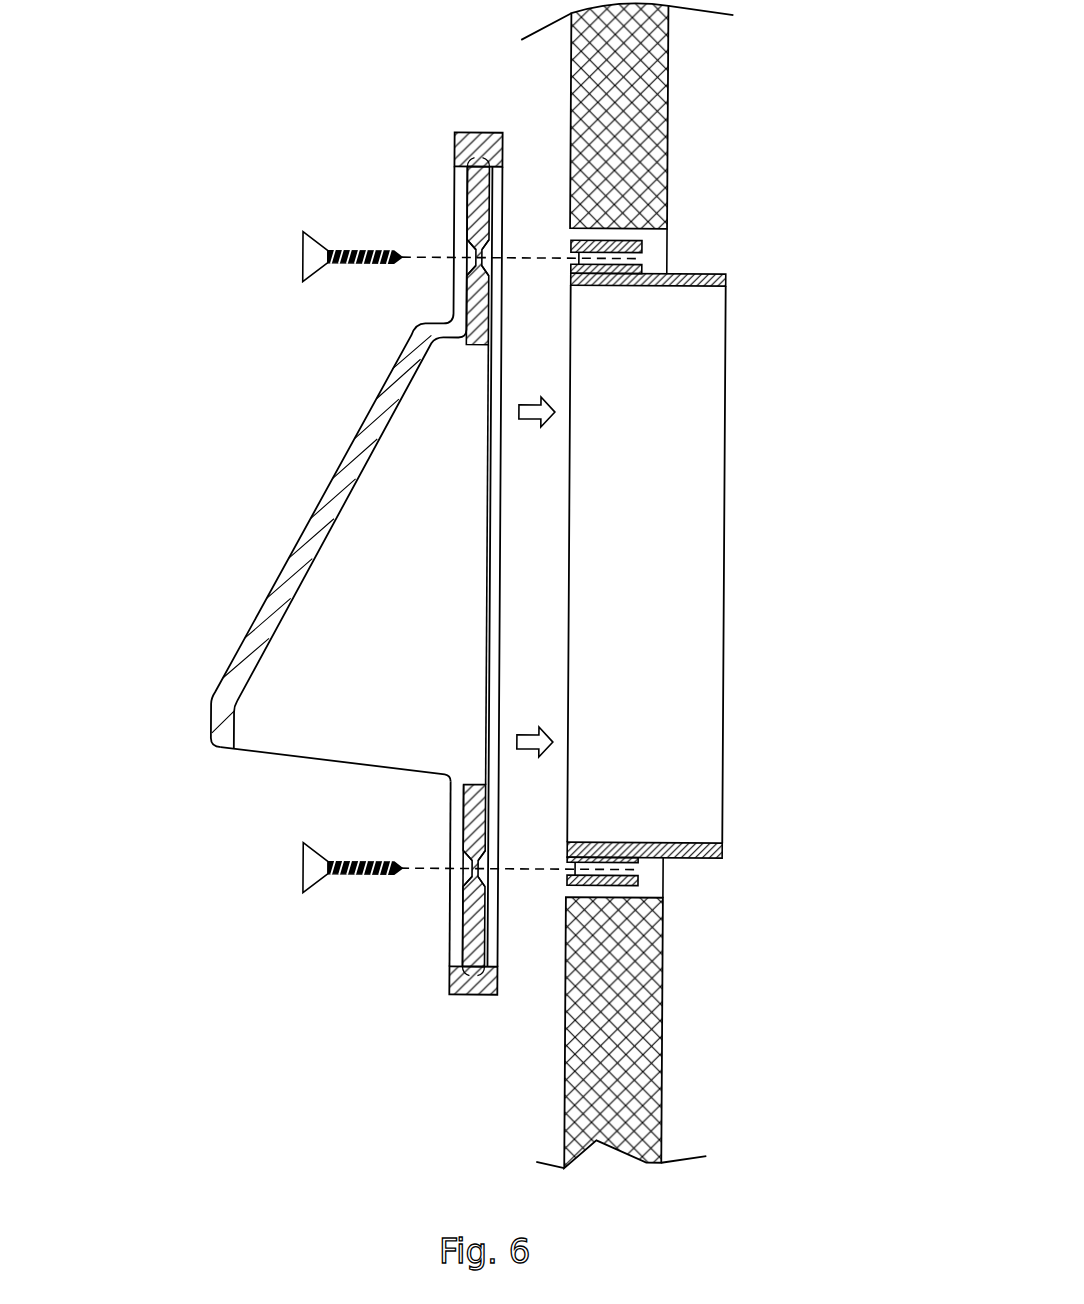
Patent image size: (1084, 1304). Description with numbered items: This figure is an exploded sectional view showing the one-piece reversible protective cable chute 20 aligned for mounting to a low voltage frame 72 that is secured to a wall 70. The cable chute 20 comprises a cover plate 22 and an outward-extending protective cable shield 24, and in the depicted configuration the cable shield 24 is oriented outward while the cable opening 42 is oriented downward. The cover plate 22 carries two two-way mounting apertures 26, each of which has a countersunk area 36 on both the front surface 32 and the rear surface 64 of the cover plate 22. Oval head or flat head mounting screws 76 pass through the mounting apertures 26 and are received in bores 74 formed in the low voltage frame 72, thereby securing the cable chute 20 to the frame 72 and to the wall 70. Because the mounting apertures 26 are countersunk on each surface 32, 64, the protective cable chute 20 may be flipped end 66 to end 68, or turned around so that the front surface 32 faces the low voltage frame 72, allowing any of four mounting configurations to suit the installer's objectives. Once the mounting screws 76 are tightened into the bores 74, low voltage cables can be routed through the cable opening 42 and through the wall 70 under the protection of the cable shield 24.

The protective cable chute 20 is at (272, 410).
The cover plate 22 is at (450, 142).
The protective cable shield 24 is at (315, 510).
The two-way mounting apertures 26 is at (474, 257).
The front surface 32 is at (452, 952).
The countersunk area 36 is at (470, 272).
The cable opening 42 is at (353, 745).
The rear surface 64 is at (490, 952).
The end 66 is at (476, 133).
The end 68 is at (475, 997).
The wall 70 is at (624, 79).
The low voltage frame 72 is at (621, 522).
The bores 74 is at (628, 250).
The mounting screws 76 is at (366, 250).